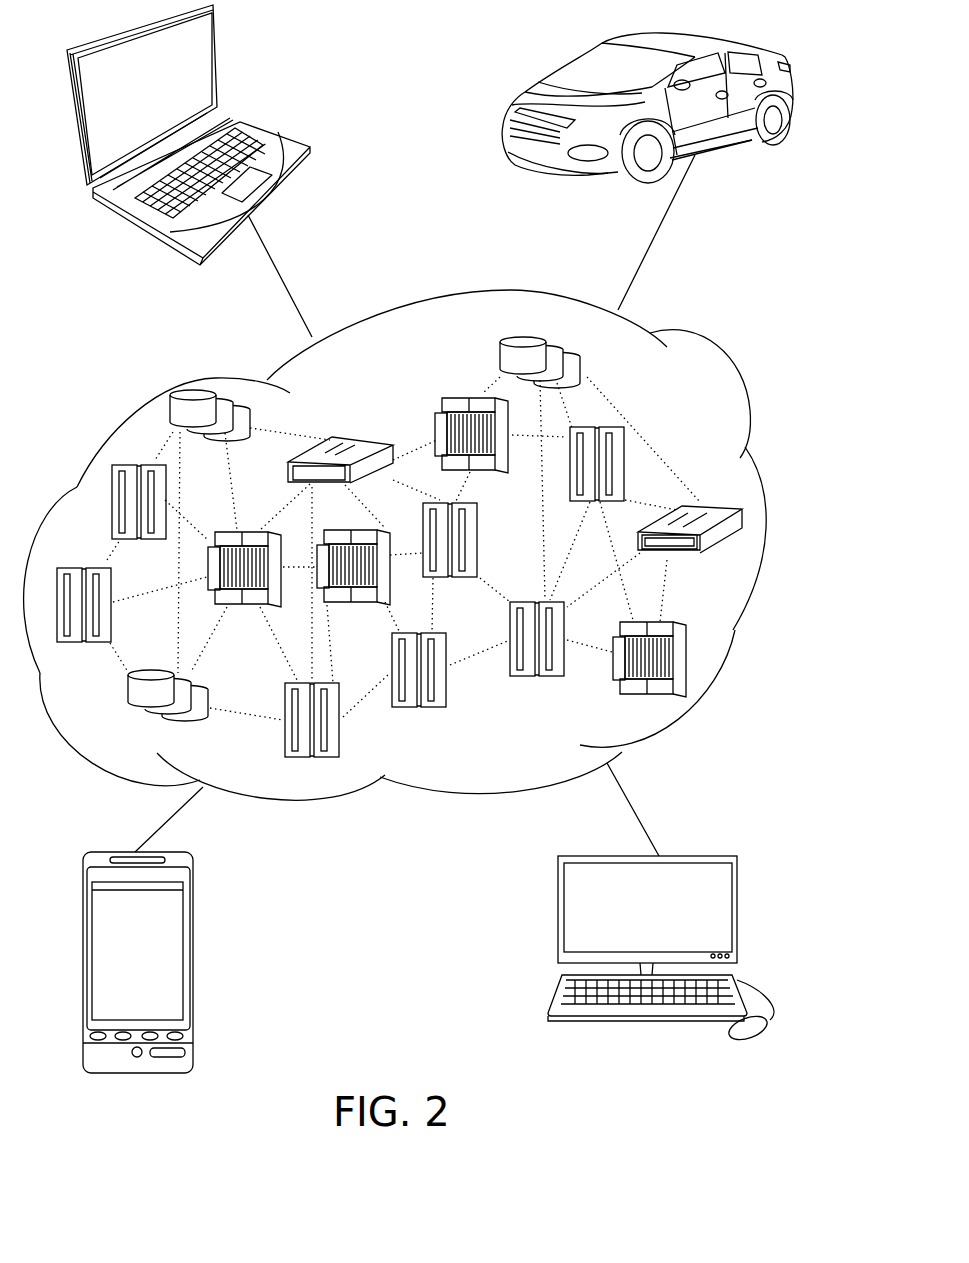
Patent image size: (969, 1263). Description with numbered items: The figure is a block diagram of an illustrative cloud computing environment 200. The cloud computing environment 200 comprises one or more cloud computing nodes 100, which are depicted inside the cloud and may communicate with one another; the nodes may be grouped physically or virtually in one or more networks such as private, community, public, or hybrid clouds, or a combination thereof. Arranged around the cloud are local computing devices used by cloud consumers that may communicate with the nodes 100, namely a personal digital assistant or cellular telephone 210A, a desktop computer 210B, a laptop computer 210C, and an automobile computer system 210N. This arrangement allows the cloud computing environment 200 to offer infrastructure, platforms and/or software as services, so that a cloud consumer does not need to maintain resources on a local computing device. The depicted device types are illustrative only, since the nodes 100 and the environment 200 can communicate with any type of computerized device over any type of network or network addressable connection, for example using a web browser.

The cloud computing node 100 is at (713, 499).
The cloud computing environment 200 is at (720, 357).
The personal digital assistant (PDA) or cellular telephone 210A is at (193, 877).
The desktop computer 210B is at (778, 852).
The laptop computer 210C is at (270, 130).
The automobile computer system 210N is at (755, 47).